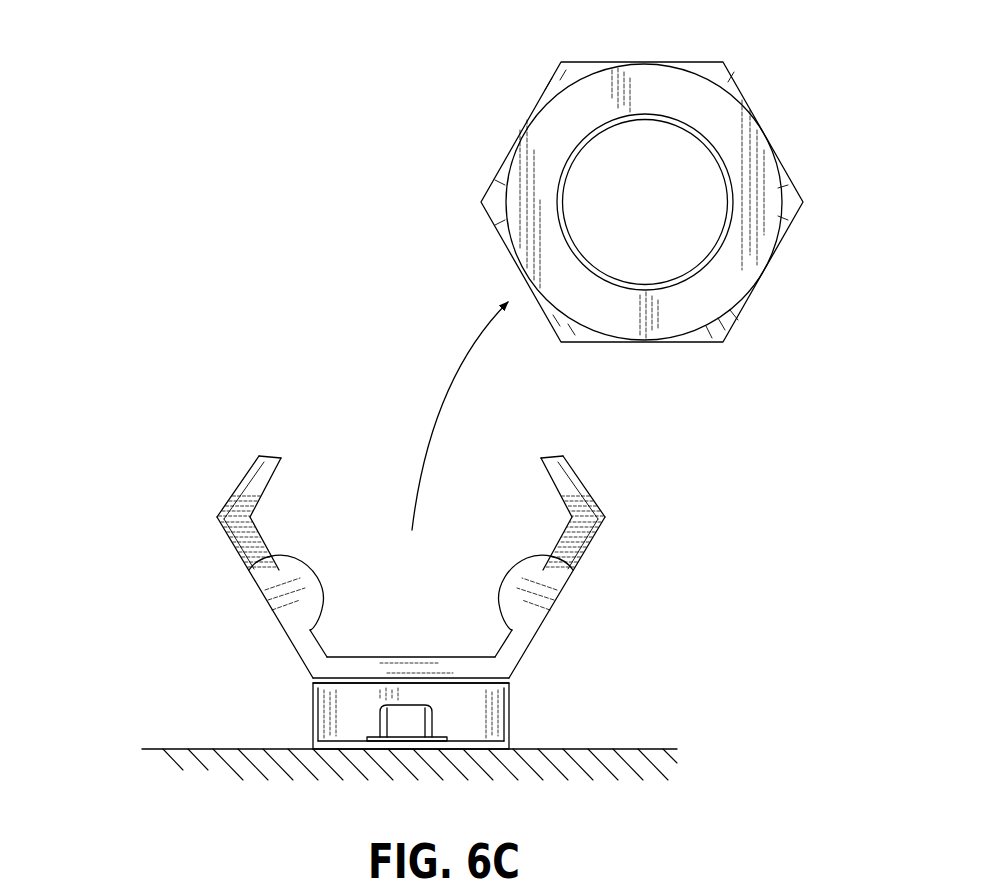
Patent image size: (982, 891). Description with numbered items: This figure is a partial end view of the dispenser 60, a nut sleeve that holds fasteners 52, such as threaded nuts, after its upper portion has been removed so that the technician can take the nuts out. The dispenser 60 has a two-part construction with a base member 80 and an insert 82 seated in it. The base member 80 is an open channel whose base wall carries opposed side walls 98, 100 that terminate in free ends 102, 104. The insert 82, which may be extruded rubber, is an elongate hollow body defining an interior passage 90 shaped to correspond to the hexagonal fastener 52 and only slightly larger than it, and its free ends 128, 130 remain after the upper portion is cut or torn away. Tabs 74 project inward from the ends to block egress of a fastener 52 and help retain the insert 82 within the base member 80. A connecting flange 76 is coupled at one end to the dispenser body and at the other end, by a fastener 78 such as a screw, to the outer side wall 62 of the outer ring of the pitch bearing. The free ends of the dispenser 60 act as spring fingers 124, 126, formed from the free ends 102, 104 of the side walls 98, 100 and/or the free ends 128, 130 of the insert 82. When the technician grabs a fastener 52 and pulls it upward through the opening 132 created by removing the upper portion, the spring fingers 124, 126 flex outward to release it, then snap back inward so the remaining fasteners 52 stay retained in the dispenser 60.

The fastener 52 is at (728, 90).
The dispenser 60 is at (126, 188).
The outer side wall 62 is at (636, 748).
The tab 74 is at (290, 607).
The connecting flange 76 is at (502, 708).
The fastener 78 is at (383, 722).
The base member 80 is at (547, 626).
The insert 82 is at (264, 533).
The interior passage 90 is at (417, 479).
The side wall 98 is at (236, 548).
The side wall 100 is at (587, 548).
The free end 102 is at (246, 466).
The free end 104 is at (571, 474).
The spring finger 124 is at (244, 462).
The spring finger 126 is at (576, 462).
The free end 128 is at (282, 458).
The free end 130 is at (540, 460).
The opening 132 is at (394, 443).